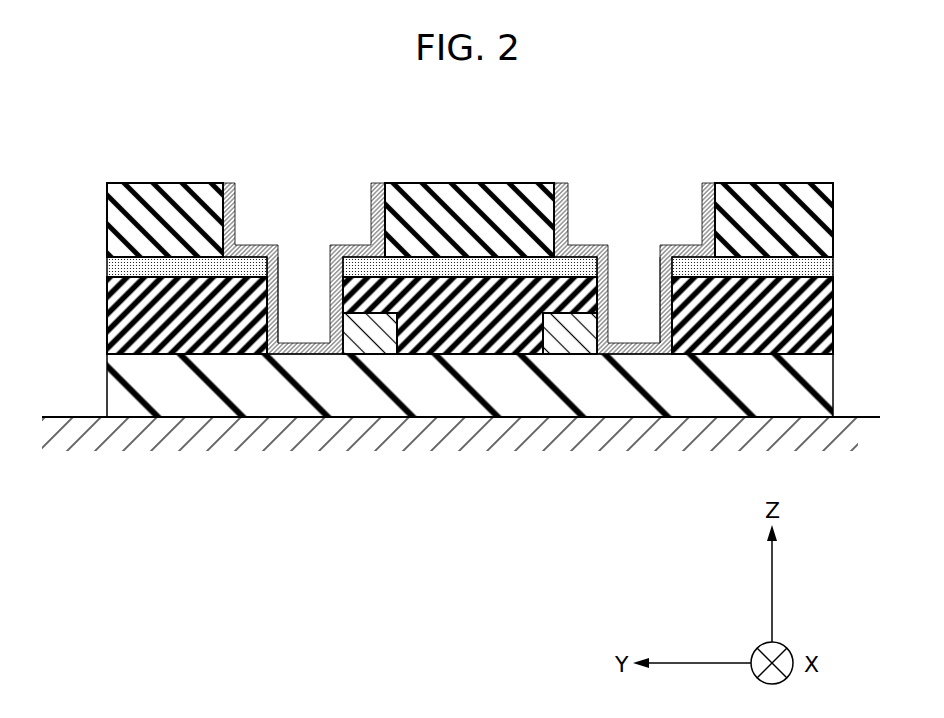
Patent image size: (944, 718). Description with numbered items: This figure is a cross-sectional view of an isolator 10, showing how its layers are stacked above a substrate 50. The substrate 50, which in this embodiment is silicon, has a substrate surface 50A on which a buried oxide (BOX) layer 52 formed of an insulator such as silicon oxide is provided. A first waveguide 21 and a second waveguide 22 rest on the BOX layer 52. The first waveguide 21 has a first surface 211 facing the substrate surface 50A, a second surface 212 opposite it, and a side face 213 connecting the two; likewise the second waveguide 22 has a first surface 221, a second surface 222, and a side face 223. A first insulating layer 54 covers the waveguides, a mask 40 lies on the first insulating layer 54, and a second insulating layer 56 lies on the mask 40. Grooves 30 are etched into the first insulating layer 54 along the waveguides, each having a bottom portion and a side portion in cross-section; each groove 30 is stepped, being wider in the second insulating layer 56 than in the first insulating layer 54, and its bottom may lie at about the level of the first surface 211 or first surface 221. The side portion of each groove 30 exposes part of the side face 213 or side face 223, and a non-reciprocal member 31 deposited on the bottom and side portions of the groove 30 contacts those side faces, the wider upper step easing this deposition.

The isolator 10 is at (633, 118).
The first waveguide 21 is at (363, 328).
The first surface 211 is at (393, 351).
The second surface 212 is at (352, 313).
The side face 213 is at (341, 338).
The second waveguide 22 is at (572, 338).
The first surface 221 is at (555, 353).
The second surface 222 is at (573, 313).
The side face 223 is at (599, 335).
The groove 30 is at (318, 313).
The non-reciprocal member 31 is at (270, 264).
The mask 40 is at (183, 267).
The substrate 50 is at (87, 445).
The substrate surface 50A is at (77, 417).
The buried oxide (BOX) layer 52 is at (781, 397).
The first insulating layer 54 is at (197, 325).
The second insulating layer 56 is at (173, 231).